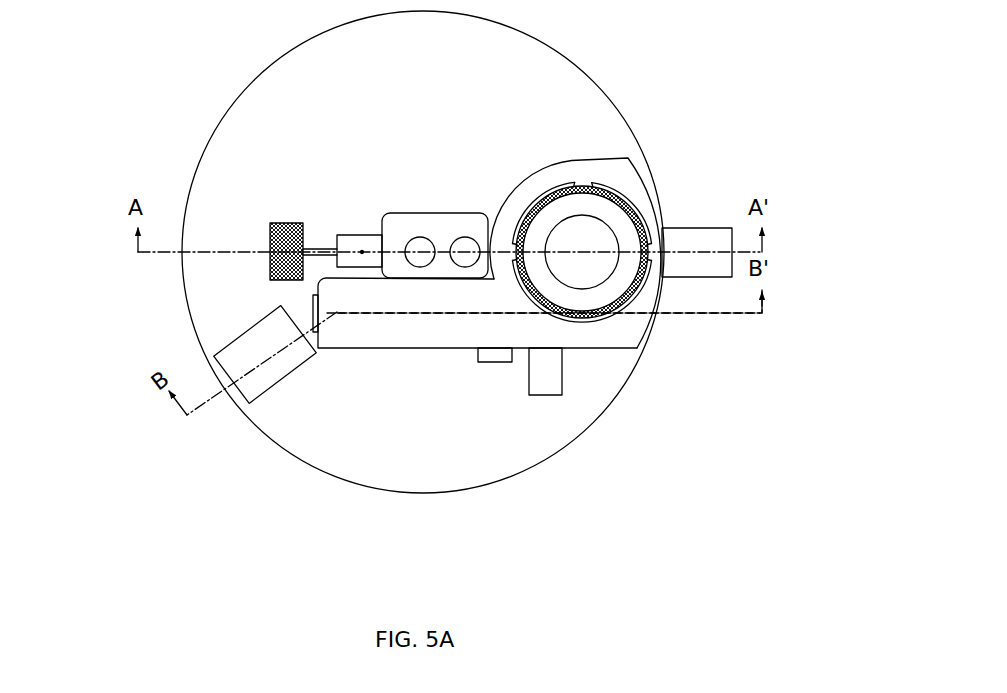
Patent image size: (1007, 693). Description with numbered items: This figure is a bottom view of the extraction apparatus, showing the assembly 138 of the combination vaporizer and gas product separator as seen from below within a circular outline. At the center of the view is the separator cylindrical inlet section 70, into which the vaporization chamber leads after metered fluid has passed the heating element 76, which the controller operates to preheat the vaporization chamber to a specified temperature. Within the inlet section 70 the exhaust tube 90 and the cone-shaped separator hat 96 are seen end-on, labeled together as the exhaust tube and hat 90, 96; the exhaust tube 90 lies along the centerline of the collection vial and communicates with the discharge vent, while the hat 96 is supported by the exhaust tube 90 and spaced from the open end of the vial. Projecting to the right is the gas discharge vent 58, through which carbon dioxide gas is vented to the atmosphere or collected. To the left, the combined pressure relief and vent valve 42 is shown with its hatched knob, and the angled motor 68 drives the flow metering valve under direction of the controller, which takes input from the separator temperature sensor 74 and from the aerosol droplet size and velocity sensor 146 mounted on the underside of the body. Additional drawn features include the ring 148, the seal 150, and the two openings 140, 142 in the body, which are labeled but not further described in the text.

The instrument assembly 138 is at (350, 252).
The combined pressure relief and vent valve 42 is at (237, 193).
The split retaining ring 148 is at (381, 173).
The separator cylindrical inlet section 70 is at (640, 191).
The gas discharge vent 58 is at (761, 215).
The heating element 76 is at (204, 307).
The motor 68 is at (196, 396).
The first port 140 is at (333, 372).
The second port 142 is at (396, 386).
The separator temperature sensor 74 is at (564, 441).
The aerosol droplet size and velocity sensor 146 is at (599, 414).
The seal ring 150 is at (634, 305).
The exhaust tube 90 is at (690, 287).
The cone-shaped separator hat 96 is at (690, 287).